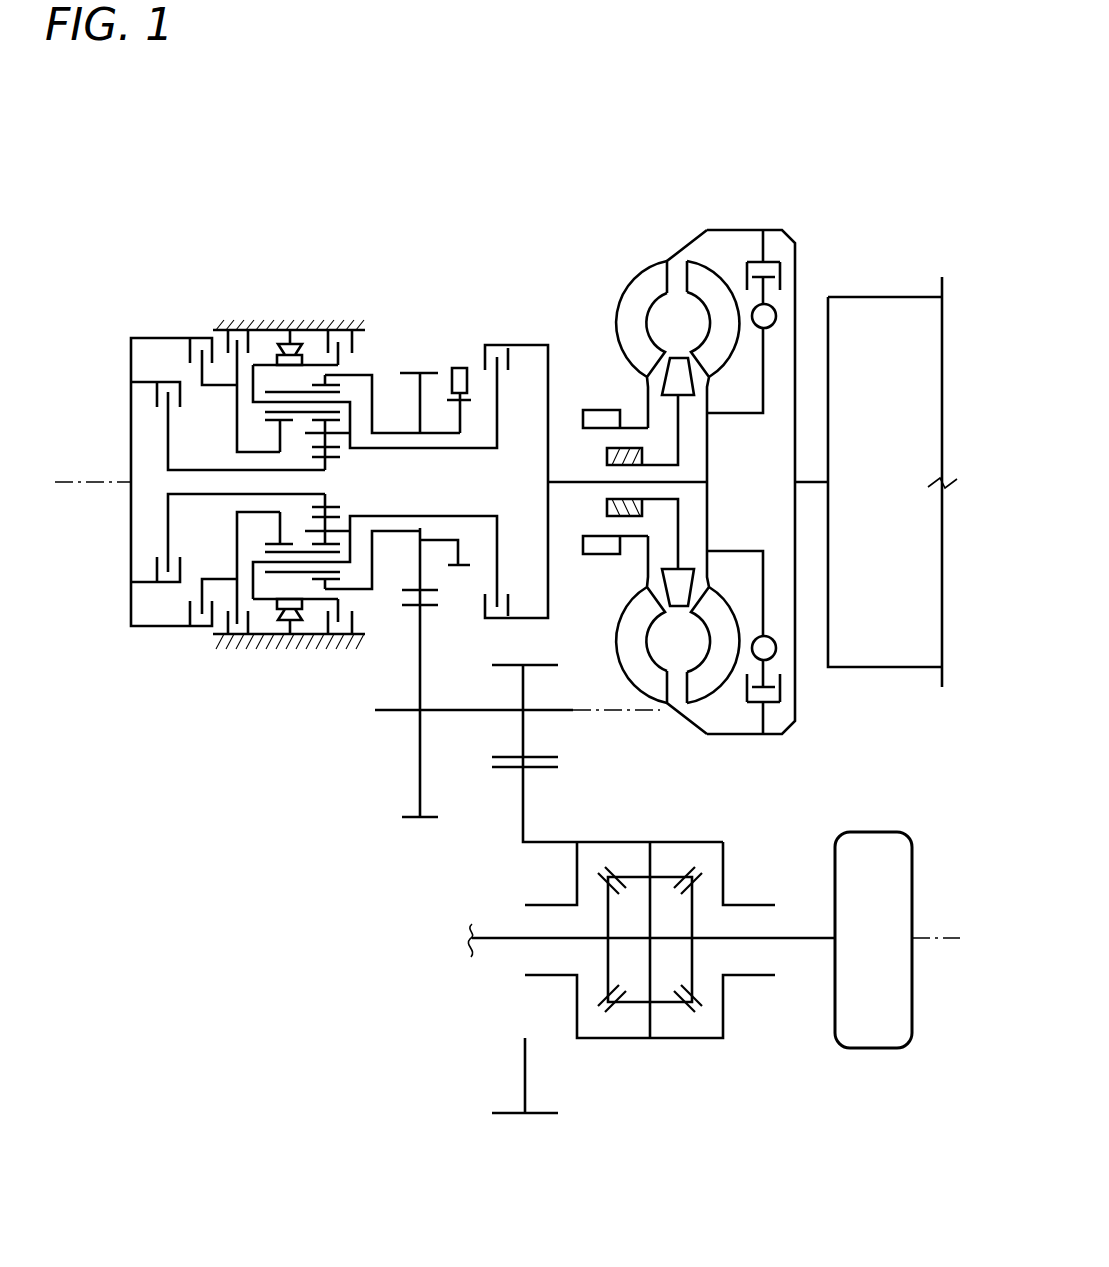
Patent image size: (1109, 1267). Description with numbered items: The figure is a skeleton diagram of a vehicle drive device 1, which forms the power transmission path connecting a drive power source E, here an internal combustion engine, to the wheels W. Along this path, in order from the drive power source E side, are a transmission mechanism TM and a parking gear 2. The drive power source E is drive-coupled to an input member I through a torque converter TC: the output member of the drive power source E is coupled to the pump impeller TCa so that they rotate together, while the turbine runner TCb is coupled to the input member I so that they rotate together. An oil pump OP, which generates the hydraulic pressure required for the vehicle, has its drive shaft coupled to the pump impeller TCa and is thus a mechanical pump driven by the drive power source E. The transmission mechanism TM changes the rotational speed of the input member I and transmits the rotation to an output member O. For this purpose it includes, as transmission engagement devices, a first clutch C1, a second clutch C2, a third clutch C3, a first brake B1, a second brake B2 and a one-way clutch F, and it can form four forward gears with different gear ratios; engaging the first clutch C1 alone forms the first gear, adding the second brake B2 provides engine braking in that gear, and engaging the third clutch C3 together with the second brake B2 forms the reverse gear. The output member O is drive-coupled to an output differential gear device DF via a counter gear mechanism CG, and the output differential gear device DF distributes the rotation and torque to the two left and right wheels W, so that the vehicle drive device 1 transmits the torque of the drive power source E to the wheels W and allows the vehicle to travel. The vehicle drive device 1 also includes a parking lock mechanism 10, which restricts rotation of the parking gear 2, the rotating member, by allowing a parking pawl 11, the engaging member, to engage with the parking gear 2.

The vehicle drive device 1 is at (163, 212).
The transmission mechanism TM is at (161, 671).
The first clutch C1 is at (150, 393).
The second clutch C2 is at (509, 359).
The third clutch C3 is at (186, 348).
The first brake B1 is at (250, 345).
The second brake B2 is at (326, 350).
The one-way clutch F is at (286, 625).
The output member O is at (412, 365).
The parking lock mechanism 10 is at (392, 482).
The parking pawl 11 is at (458, 365).
The input member I is at (558, 479).
The parking gear 2 is at (456, 566).
The torque converter TC is at (658, 236).
The pump impeller TCa is at (634, 291).
The turbine runner TCb is at (701, 276).
The oil pump OP is at (606, 566).
The drive power source E is at (857, 296).
The counter gear mechanism CG is at (343, 778).
The output differential gear device DF is at (466, 1013).
The wheels W is at (870, 1050).